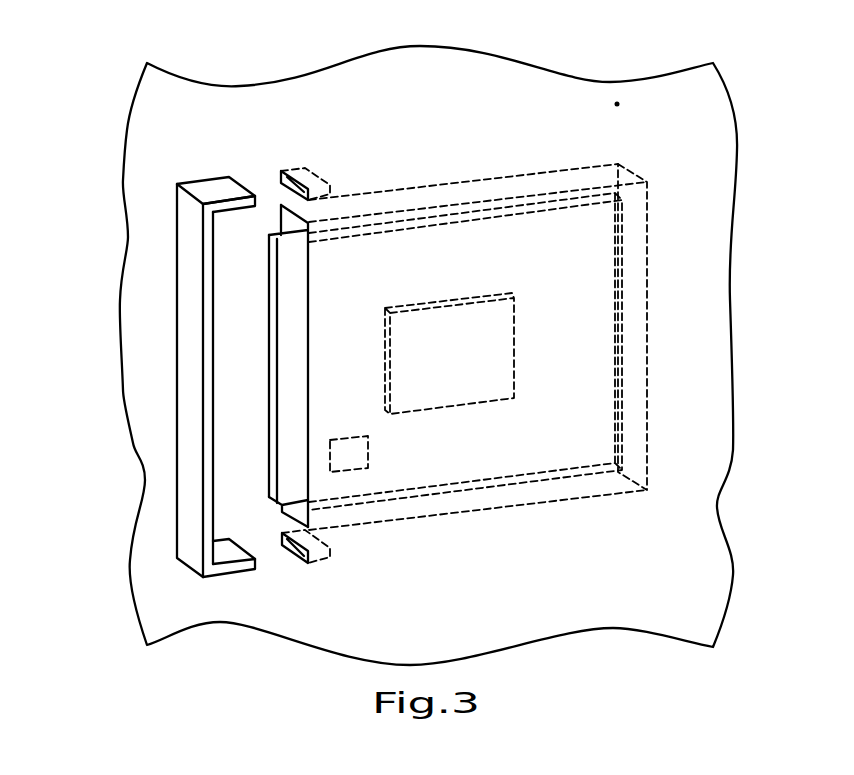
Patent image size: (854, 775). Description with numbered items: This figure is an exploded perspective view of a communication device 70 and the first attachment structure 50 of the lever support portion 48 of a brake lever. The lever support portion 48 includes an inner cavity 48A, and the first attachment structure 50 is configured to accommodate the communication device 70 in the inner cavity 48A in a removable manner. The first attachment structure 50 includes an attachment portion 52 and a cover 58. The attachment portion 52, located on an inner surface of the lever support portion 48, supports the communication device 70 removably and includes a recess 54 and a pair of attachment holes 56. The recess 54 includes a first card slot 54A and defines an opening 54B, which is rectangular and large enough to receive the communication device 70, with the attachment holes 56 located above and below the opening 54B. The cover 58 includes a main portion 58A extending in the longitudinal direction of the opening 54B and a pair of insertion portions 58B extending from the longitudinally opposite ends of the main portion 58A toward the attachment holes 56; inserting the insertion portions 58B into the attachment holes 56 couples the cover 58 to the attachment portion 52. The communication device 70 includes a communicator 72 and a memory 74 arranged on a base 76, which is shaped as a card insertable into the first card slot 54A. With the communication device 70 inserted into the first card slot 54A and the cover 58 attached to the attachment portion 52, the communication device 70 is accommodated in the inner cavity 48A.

The lever support portion 48 is at (508, 92).
The inner cavity 48A is at (617, 103).
The first attachment structure 50 is at (170, 157).
The attachment portion 52 is at (558, 536).
The recess 54 is at (470, 374).
The first card slot 54A is at (638, 325).
The opening 54B is at (283, 520).
The attachment holes 56 is at (288, 170).
The cover 58 is at (153, 396).
The main portion 58A is at (176, 376).
The insertion portions 58B is at (198, 184).
The communication device 70 is at (268, 349).
The communicator 72 is at (466, 292).
The memory 74 is at (370, 452).
The base 76 is at (268, 436).